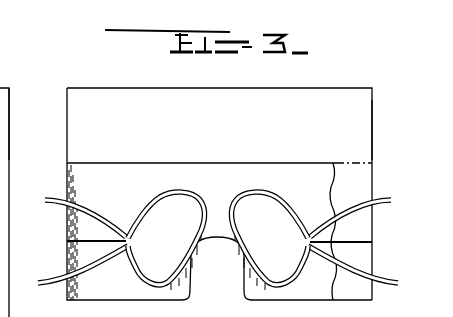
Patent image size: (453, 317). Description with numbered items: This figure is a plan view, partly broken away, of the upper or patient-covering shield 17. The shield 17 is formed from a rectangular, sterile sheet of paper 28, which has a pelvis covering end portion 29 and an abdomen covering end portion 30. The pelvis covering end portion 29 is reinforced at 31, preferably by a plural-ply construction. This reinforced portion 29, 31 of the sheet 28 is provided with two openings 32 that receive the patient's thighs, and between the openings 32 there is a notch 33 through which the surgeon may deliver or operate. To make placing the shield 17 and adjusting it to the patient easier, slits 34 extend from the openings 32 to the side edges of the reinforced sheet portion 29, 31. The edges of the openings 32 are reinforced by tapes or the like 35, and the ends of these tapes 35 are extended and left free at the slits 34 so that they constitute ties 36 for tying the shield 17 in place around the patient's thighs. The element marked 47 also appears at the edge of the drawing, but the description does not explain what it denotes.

The upper or patient-covering shield 17 is at (376, 66).
The sterile sheet of paper 28 is at (116, 100).
The pelvis covering end portion 29 is at (358, 262).
The abdomen covering end portion 30 is at (358, 126).
The reinforcement 31 is at (240, 170).
The openings 32 is at (255, 217).
The notch 33 is at (228, 243).
The slits 34 is at (67, 241).
The tapes 35 is at (150, 197).
The ties 36 is at (51, 199).
The adjacent member 47 is at (9, 57).